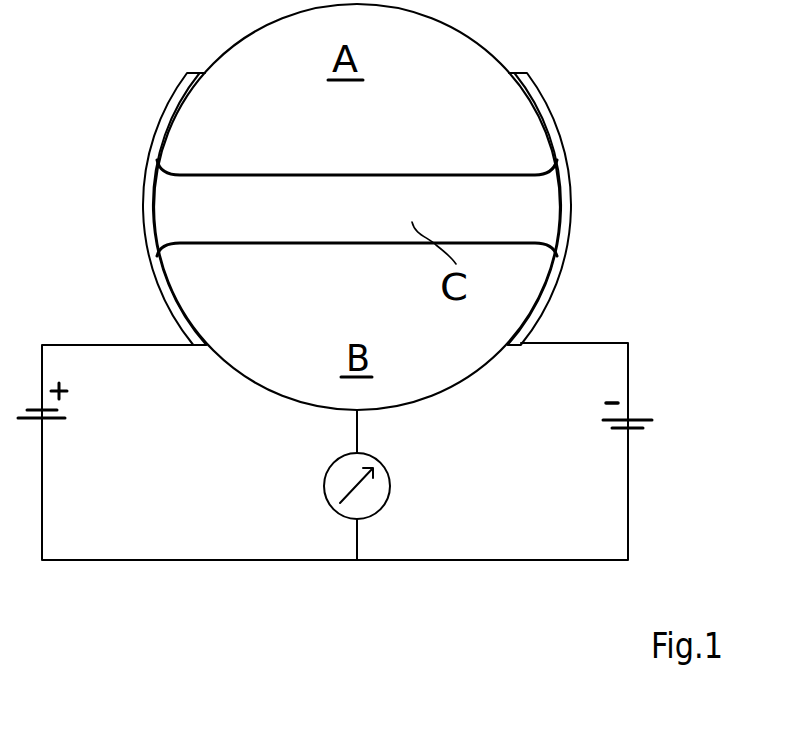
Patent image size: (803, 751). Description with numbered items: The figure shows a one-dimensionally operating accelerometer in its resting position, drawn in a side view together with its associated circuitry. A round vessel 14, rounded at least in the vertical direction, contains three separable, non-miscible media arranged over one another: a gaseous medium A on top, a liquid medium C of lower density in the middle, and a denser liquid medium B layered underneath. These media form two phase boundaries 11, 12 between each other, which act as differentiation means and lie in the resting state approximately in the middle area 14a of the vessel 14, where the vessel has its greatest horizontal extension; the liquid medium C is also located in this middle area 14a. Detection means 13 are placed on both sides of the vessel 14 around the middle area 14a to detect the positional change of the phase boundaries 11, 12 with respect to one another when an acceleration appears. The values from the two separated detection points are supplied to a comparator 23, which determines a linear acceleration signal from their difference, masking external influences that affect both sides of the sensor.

The phase boundary 11 is at (300, 176).
The phase boundary 12 is at (337, 243).
The detection means 13 is at (166, 137).
The vessel 14 is at (470, 380).
The middle area of the vessel 14a is at (560, 213).
The comparator 23 is at (389, 506).